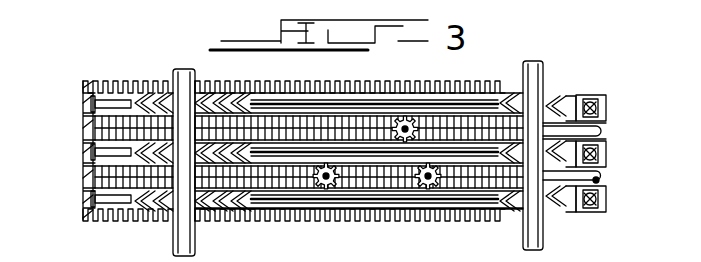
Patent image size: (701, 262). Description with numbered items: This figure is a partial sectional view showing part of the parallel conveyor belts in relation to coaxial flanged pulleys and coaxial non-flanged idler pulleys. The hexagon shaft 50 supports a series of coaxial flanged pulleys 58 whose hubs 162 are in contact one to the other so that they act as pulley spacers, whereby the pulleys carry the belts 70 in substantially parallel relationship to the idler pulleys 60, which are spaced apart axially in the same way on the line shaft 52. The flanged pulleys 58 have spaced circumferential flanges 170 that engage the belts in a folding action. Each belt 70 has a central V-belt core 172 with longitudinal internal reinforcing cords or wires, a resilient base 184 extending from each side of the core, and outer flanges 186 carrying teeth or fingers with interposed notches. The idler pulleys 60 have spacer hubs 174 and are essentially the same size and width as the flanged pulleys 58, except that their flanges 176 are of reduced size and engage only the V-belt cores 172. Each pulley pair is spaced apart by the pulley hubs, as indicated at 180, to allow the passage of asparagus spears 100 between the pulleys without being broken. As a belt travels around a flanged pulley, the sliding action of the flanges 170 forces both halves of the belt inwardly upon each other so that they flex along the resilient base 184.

The hexagon shaft 50 is at (512, 222).
The line shaft 52 is at (187, 232).
The flanged pulleys 58 is at (555, 90).
The idler pulleys 60 is at (255, 82).
The belts 70 is at (470, 82).
The asparagus spears 100 is at (396, 108).
The hubs 162 is at (540, 128).
The circumferential flanges 170 is at (590, 86).
The V-belt core 172 is at (322, 95).
The spacer hubs 174 is at (200, 78).
The flanges 176 is at (137, 78).
The pulley pair spacing 180 is at (594, 150).
The resilient base 184 is at (75, 88).
The outer flanges 186 is at (99, 73).